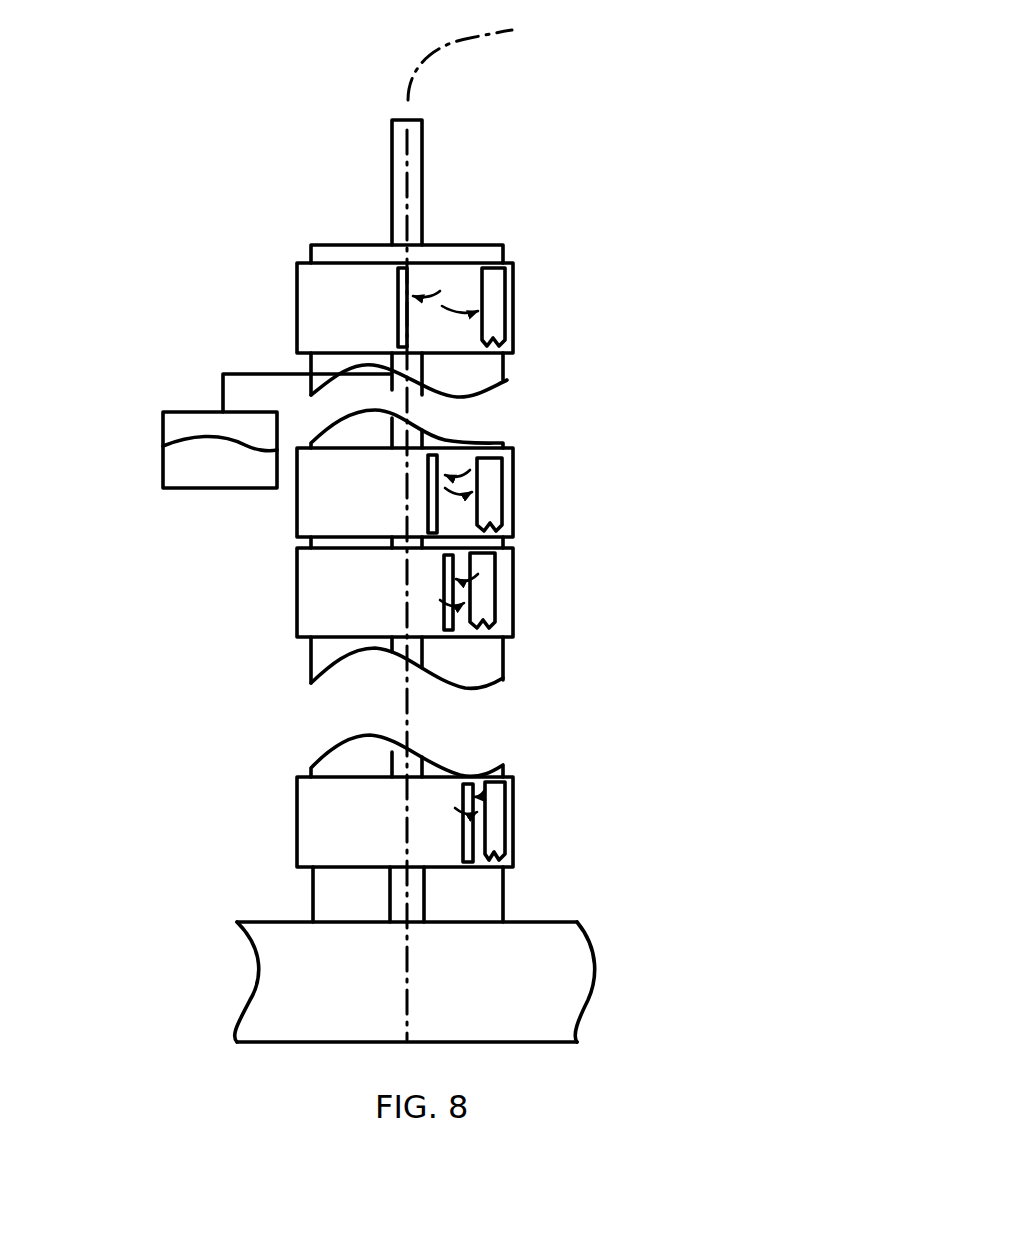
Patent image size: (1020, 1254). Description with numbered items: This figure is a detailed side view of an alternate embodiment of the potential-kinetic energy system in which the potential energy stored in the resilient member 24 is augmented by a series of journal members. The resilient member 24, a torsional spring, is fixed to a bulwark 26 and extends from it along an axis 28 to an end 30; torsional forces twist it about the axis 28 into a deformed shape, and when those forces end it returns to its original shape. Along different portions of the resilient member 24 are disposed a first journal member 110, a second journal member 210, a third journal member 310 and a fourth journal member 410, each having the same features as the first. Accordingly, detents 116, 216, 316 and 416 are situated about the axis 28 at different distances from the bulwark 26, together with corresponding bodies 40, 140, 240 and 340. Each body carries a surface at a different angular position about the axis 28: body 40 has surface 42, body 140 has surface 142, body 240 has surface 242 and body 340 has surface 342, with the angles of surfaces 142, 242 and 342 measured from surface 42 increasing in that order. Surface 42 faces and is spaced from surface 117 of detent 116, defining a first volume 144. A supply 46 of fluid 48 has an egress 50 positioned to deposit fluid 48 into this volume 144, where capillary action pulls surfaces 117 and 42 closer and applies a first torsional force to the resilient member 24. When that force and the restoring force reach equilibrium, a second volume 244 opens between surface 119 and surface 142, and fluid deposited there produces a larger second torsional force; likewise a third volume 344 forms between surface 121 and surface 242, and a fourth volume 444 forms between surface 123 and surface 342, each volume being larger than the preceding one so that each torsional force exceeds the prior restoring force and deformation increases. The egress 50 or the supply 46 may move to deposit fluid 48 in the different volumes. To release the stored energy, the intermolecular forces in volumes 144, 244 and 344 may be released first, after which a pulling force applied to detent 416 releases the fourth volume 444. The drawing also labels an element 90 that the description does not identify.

The axis 28 is at (481, 60).
The key 90 is at (405, 265).
The resilient member 24 is at (480, 245).
The journal member 410 is at (513, 275).
The surface of detent 123 is at (435, 290).
The detent 416 is at (400, 306).
The surface of body 342 is at (445, 304).
The body 340 is at (505, 322).
The fourth volume 444 is at (458, 352).
The egress 50 is at (390, 375).
The end 30 is at (266, 238).
The supply 46 is at (163, 423).
The fluid 48 is at (220, 450).
The surface of detent 121 is at (447, 466).
The detent 316 is at (430, 485).
The third volume 344 is at (453, 511).
The journal member 310 is at (513, 458).
The surface of body 242 is at (478, 490).
The body 240 is at (495, 515).
The surface of detent 119 is at (462, 568).
The detent 216 is at (450, 592).
The surface of body 142 is at (468, 595).
The body 140 is at (485, 618).
The journal member 210 is at (513, 558).
The second volume 244 is at (464, 634).
The surface of detent 117 is at (480, 790).
The detent 116 is at (468, 835).
The surface of body 42 is at (470, 802).
The body 40 is at (487, 848).
The journal member 110 is at (513, 830).
The bulwark 26 is at (537, 921).
The volume 144 is at (477, 877).